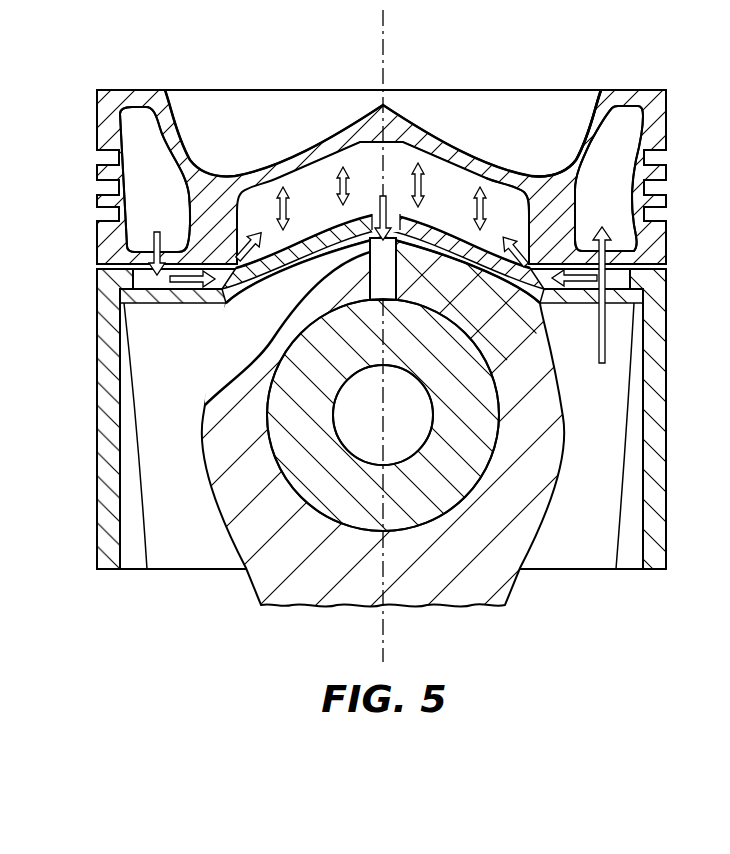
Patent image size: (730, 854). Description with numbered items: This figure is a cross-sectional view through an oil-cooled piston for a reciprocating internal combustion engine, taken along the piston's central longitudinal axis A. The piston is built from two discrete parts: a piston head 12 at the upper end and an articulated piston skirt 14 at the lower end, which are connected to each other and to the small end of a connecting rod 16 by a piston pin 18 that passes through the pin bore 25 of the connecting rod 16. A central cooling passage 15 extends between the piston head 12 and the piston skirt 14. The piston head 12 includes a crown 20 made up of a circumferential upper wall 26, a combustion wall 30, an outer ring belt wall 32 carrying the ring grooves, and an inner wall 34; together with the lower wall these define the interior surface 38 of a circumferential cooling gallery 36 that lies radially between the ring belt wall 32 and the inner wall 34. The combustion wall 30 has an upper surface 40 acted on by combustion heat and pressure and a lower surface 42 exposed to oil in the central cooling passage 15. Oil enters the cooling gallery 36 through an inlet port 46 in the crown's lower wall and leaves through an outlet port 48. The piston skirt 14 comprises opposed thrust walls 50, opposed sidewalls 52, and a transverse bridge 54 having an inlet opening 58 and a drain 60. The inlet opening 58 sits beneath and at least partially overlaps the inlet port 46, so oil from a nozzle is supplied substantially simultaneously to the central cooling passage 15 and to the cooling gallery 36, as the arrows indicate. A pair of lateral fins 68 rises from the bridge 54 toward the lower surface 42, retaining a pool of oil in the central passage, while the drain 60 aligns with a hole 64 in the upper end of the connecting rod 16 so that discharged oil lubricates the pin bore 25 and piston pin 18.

The piston head 12 is at (97, 111).
The piston skirt 14 is at (97, 455).
The central cooling passage 15 is at (398, 152).
The connecting rod 16 is at (257, 582).
The piston pin 18 is at (431, 519).
The crown 20 is at (98, 251).
The pin bore 25 is at (465, 482).
The circumferential upper wall 26 is at (140, 90).
The combustion wall 30 is at (281, 162).
The outer ring belt wall 32 is at (667, 132).
The inner wall 34 is at (573, 193).
The circumferential cooling gallery 36 is at (627, 120).
The interior surface 38 is at (594, 158).
The upper surface 40 is at (441, 138).
The lower surface 42 is at (360, 142).
The inlet port 46 is at (633, 254).
The outlet port 48 is at (132, 250).
The thrust walls 50 is at (110, 570).
The sidewalls 52 is at (590, 559).
The transverse bridge 54 is at (173, 303).
The inlet opening 58 is at (638, 298).
The drain 60 is at (362, 218).
The hole 64 is at (369, 294).
The lateral fins 68 is at (446, 192).
The central longitudinal axis A is at (385, 22).